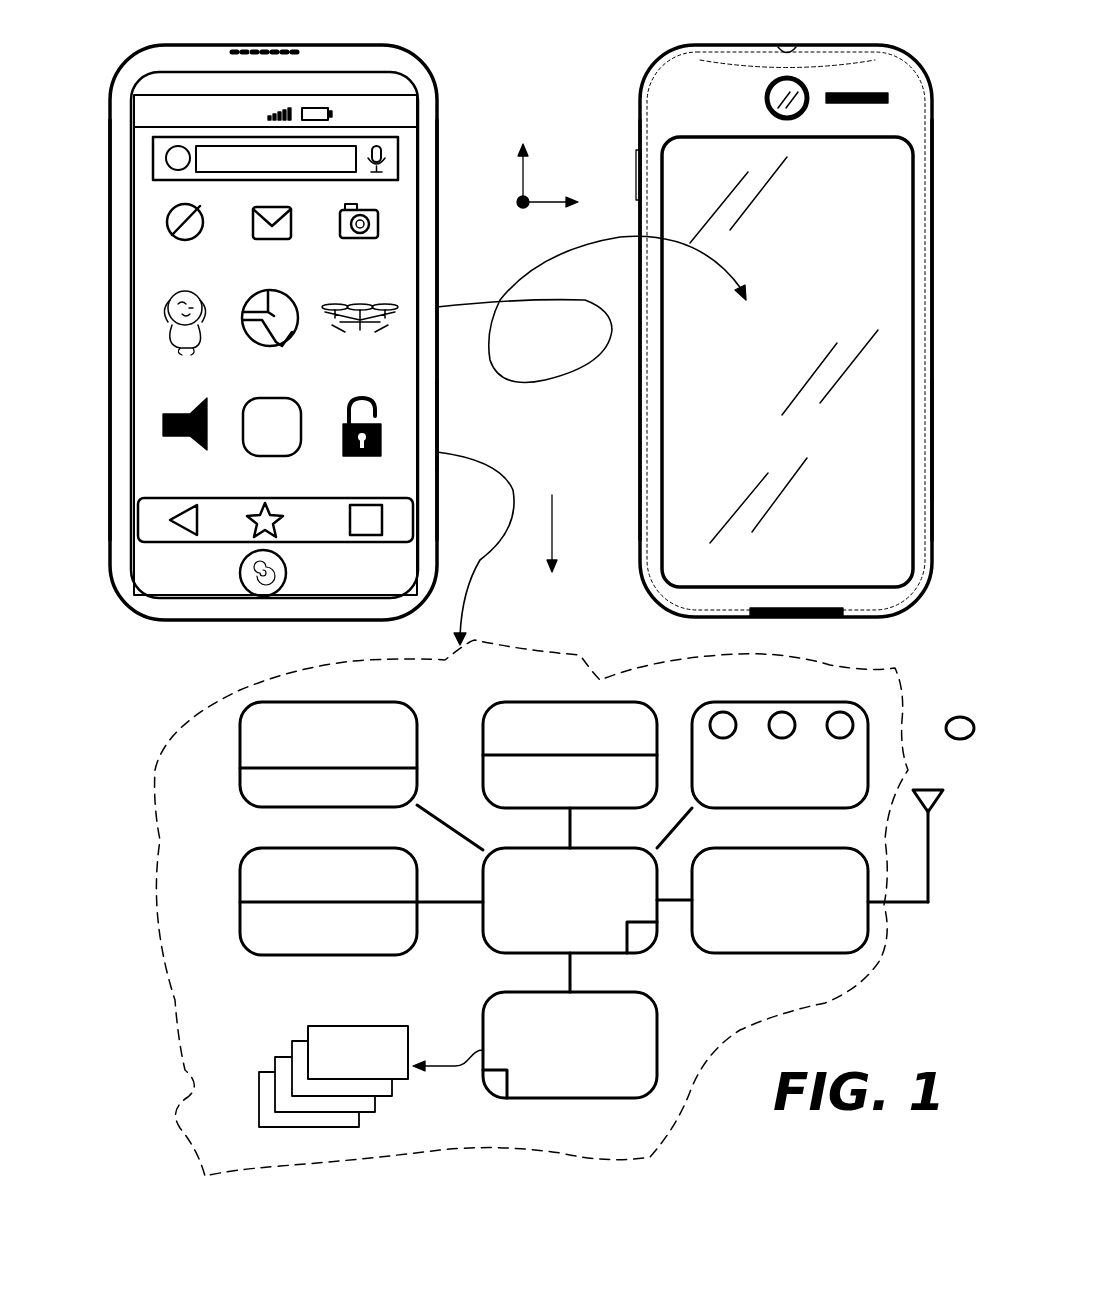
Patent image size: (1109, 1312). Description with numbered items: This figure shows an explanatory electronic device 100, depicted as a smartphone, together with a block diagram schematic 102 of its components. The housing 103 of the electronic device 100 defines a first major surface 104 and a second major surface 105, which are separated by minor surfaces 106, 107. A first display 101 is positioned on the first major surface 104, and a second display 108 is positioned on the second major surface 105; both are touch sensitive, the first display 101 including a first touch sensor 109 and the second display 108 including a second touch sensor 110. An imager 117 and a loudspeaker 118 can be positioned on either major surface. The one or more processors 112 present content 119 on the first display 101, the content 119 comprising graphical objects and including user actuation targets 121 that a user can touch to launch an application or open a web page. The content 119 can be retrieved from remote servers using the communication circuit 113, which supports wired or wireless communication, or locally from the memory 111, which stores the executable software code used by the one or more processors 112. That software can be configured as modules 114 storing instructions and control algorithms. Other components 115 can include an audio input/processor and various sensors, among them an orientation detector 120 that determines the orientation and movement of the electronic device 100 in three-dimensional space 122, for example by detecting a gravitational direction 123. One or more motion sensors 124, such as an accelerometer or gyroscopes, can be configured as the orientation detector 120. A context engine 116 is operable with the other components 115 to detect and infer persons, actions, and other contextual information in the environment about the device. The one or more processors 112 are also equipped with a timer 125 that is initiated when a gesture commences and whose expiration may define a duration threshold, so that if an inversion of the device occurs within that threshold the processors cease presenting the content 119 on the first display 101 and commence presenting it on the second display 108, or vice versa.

The electronic device 100 is at (470, 125).
The first display 101 is at (371, 408).
The block diagram schematic 102 is at (922, 698).
The housing 103 is at (437, 425).
The first major surface 104 is at (437, 536).
The second major surface 105 is at (893, 119).
The minor surface 106 is at (100, 200).
The minor surface 107 is at (450, 242).
The second display 108 is at (893, 367).
The first touch sensor 109 is at (595, 810).
The second touch sensor 110 is at (400, 940).
The memory 111 is at (640, 1068).
The one or more processors 112 is at (515, 960).
The communication circuit 113 is at (790, 955).
The modules 114 is at (262, 1042).
The other components 115 is at (397, 737).
The context engine 116 is at (258, 790).
The imager 117 is at (767, 83).
The loudspeaker 118 is at (870, 93).
The content 119 is at (148, 372).
The orientation detector 120 is at (808, 812).
The user actuation target 121 is at (168, 314).
The three-dimensional space 122 is at (542, 200).
The gravitational direction 123 is at (552, 545).
The motion sensors 124 is at (728, 715).
The timer 125 is at (643, 945).